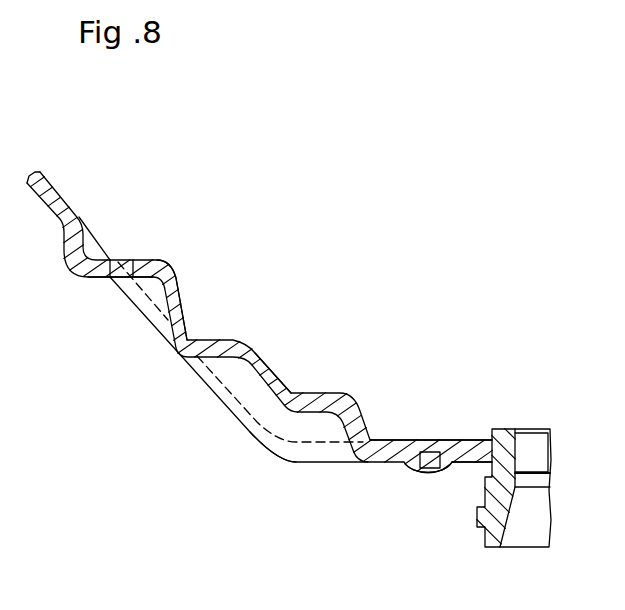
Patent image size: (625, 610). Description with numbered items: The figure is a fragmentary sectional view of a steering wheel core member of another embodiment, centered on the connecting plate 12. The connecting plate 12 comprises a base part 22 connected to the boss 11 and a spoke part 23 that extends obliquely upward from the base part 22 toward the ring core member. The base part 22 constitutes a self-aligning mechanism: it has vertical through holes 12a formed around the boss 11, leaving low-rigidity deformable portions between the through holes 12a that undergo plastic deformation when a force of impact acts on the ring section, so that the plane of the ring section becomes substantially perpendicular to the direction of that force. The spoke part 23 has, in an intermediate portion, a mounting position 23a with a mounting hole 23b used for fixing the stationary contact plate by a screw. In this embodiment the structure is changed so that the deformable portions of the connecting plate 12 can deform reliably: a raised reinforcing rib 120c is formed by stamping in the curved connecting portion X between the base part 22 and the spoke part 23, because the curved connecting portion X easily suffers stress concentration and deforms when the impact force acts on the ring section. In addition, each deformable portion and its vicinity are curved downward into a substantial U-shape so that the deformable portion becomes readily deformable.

The boss 11 is at (500, 444).
The connecting plate 12 is at (254, 312).
The through hole 12a is at (431, 468).
The raised reinforcing rib 120c is at (282, 390).
The base part 22 is at (482, 442).
The spoke part 23 is at (66, 197).
The mounting position 23a is at (157, 260).
The mounting hole 23b is at (120, 291).
The curved connecting portion X is at (278, 470).